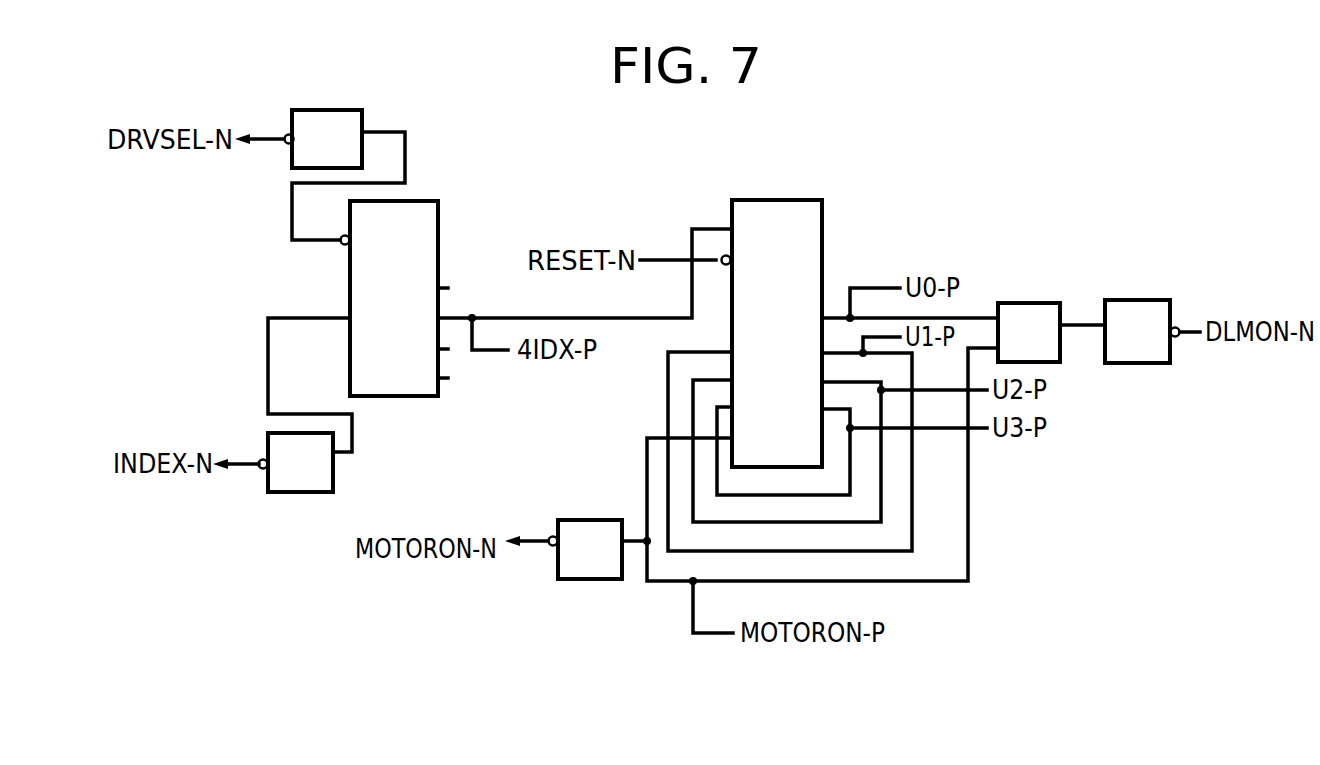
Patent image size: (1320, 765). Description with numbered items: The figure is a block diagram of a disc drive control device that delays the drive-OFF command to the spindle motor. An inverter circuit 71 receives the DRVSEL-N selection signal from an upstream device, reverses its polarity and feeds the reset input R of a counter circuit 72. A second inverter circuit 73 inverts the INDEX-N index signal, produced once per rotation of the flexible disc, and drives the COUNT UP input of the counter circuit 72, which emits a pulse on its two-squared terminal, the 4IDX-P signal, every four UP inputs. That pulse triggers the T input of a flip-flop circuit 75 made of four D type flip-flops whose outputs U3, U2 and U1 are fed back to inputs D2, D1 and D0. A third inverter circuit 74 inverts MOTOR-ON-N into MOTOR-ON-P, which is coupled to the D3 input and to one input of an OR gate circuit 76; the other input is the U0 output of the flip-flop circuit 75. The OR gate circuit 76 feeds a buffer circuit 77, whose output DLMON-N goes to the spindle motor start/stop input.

The inverter circuit 71 is at (329, 108).
The counter circuit 72 is at (440, 208).
The inverter circuit 73 is at (292, 494).
The inverter circuit 74 is at (588, 581).
The flip-flop circuit 75 is at (773, 198).
The OR gate circuit 76 is at (1023, 302).
The buffer circuit 77 is at (1128, 299).